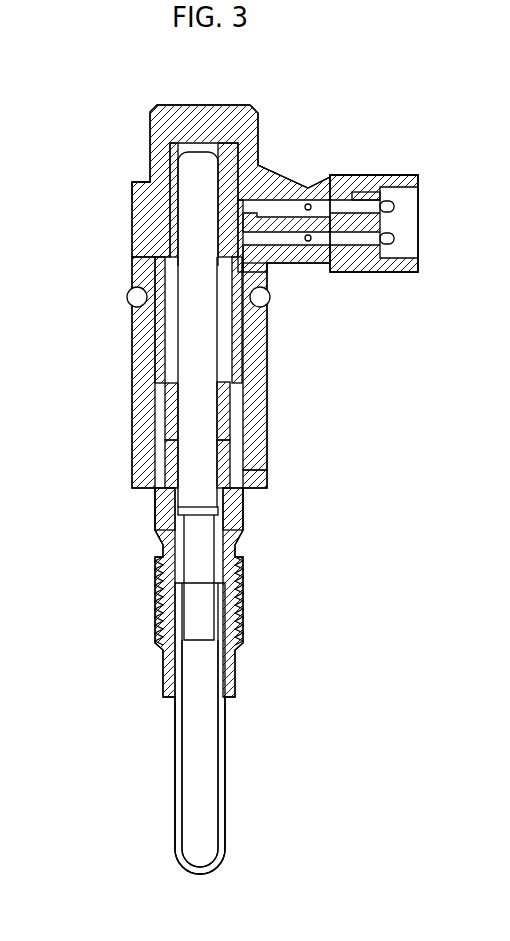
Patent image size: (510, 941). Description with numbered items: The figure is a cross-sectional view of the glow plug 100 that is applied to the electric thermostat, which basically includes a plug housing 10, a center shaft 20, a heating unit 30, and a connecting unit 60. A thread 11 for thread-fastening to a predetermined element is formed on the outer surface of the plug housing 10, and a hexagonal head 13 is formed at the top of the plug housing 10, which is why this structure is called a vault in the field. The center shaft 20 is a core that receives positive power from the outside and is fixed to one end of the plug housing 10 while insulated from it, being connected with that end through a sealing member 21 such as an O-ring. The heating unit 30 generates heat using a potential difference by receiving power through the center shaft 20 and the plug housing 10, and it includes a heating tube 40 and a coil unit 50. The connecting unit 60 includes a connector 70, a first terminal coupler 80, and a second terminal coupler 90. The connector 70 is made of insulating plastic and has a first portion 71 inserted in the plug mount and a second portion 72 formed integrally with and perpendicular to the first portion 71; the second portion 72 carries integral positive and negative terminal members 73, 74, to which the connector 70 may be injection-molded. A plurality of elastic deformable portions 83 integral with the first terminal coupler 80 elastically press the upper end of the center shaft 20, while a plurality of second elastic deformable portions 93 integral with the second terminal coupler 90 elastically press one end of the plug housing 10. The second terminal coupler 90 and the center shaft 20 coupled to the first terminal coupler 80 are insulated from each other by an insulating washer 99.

The glow plug 100 is at (190, 70).
The plug housing 10 is at (255, 593).
The thread 11 is at (245, 617).
The hexagonal head 13 is at (240, 521).
The center shaft 20 is at (190, 368).
The sealing member 21 is at (267, 483).
The heating unit 30 is at (245, 772).
The heating tube 40 is at (177, 770).
The coil unit 50 is at (194, 723).
The connecting unit 60 is at (280, 164).
The connector 70 is at (358, 327).
The first portion 71 is at (262, 350).
The second portion 72 is at (300, 262).
The positive terminal member 73 is at (368, 177).
The negative terminal member 74 is at (368, 250).
The first terminal coupler 80 is at (158, 219).
The elastic deformable portion 83 is at (132, 183).
The second terminal coupler 90 is at (145, 337).
The second elastic deformable portion 93 is at (160, 407).
The insulating washer 99 is at (160, 462).